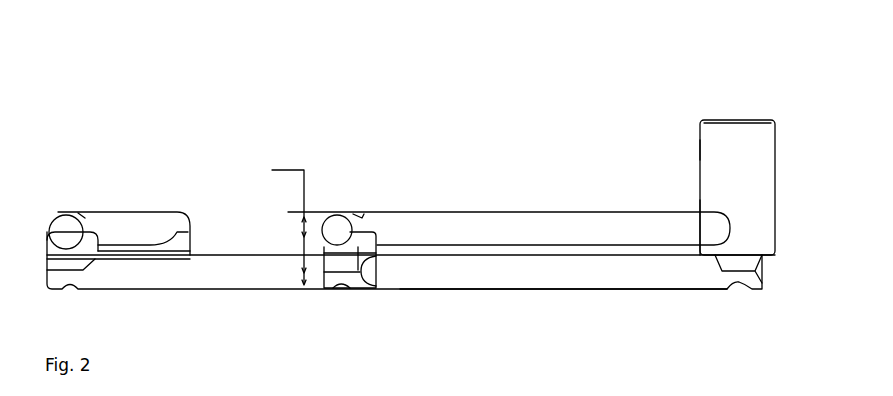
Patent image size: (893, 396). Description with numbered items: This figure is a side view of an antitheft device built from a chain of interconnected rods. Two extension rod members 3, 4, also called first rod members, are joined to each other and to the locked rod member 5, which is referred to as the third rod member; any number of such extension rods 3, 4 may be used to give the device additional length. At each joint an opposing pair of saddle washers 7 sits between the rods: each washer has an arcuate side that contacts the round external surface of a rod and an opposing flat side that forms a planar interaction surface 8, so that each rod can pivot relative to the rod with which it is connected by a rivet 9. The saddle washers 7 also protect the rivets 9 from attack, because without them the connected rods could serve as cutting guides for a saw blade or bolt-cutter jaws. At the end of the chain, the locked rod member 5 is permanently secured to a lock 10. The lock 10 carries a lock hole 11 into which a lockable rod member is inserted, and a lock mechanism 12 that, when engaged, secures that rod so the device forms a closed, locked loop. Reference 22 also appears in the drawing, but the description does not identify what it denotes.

The extension rod member 3 is at (200, 290).
The extension rod member 4 is at (135, 212).
The locked rod member 5 is at (565, 290).
The saddle washer 7 is at (340, 274).
The planar interaction surface 8 is at (333, 262).
The rivet 9 is at (70, 289).
The lock 10 is at (700, 150).
The lock hole 11 is at (712, 212).
The lock mechanism 12 is at (743, 117).
The rod 22 is at (520, 212).